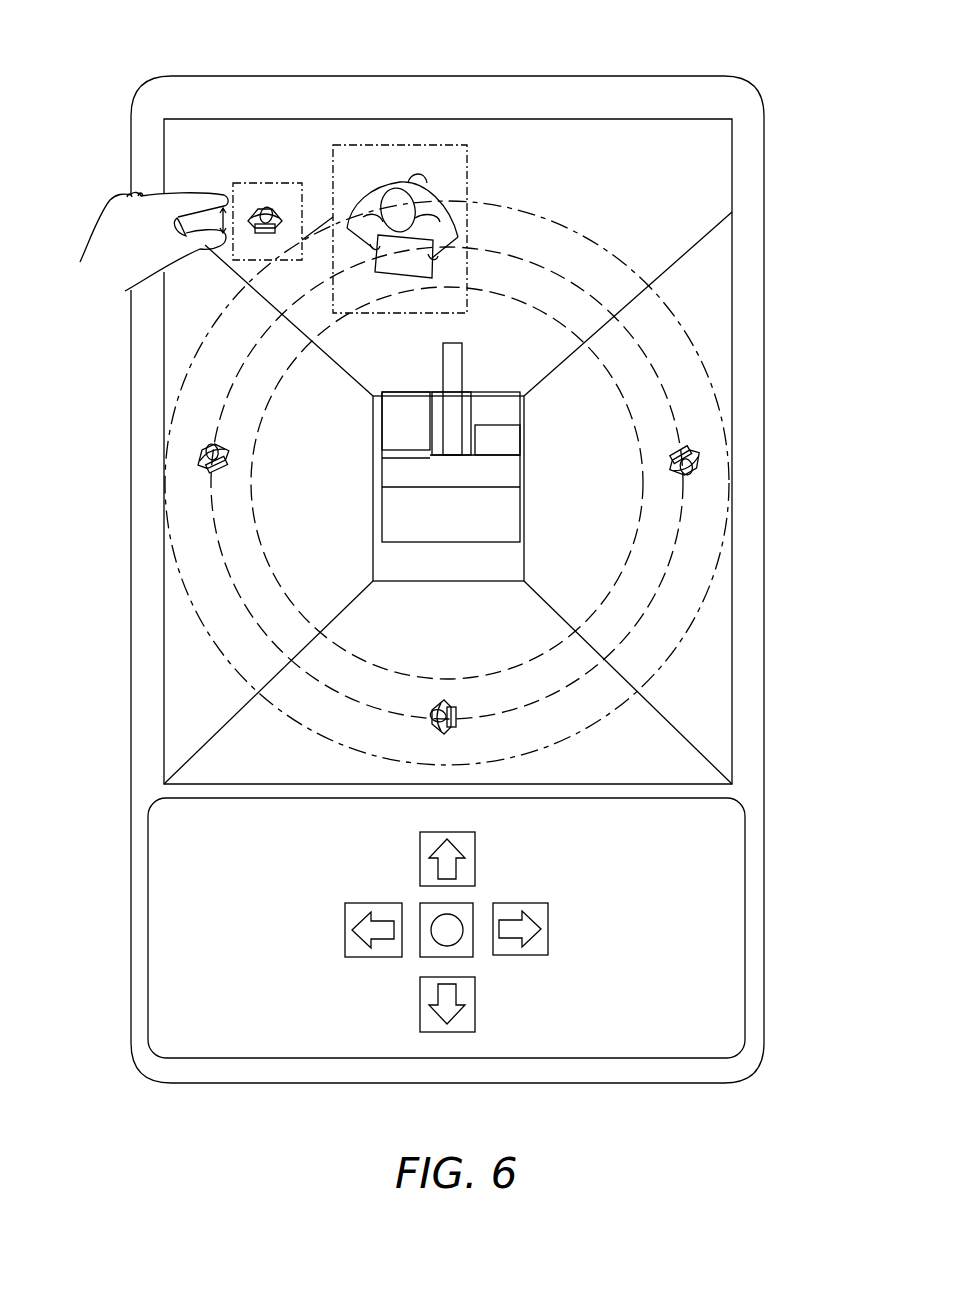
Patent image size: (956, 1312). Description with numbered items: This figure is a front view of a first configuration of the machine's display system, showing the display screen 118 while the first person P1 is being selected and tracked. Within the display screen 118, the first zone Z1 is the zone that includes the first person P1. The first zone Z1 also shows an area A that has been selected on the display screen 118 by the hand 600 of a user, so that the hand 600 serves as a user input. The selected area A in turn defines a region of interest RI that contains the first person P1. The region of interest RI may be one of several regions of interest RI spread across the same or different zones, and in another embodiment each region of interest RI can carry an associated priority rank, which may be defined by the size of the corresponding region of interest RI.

The display screen 118 is at (129, 415).
The hand 600 is at (110, 219).
The first zone Z1 is at (575, 157).
The first person P1 is at (435, 200).
The area A is at (282, 183).
The region of interest RI is at (262, 203).